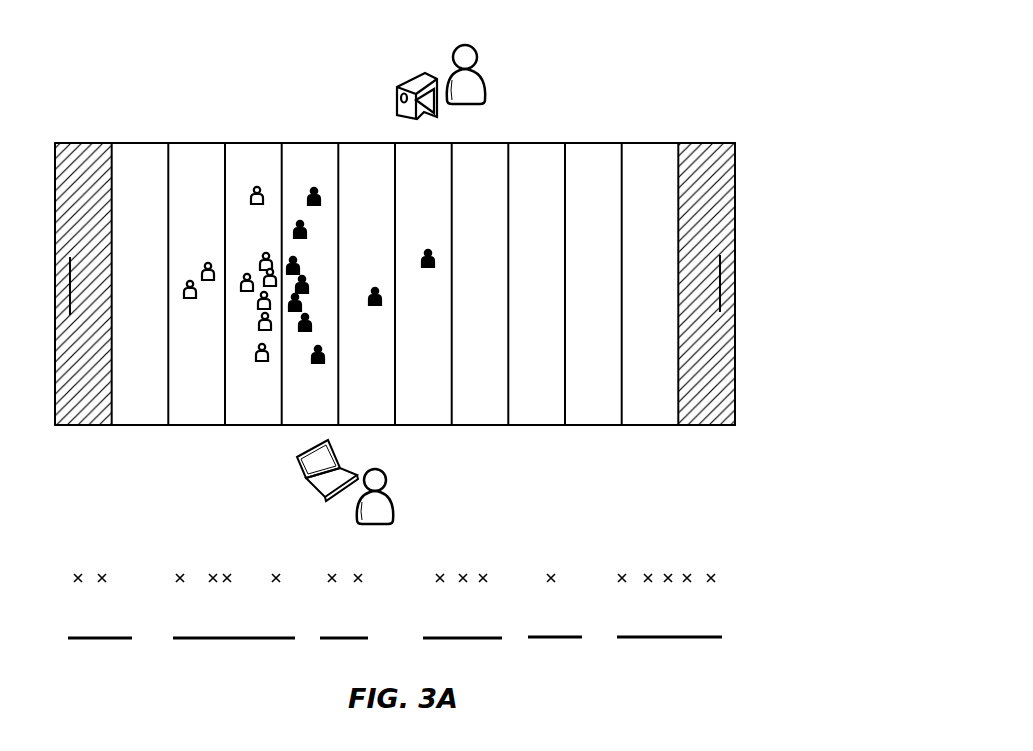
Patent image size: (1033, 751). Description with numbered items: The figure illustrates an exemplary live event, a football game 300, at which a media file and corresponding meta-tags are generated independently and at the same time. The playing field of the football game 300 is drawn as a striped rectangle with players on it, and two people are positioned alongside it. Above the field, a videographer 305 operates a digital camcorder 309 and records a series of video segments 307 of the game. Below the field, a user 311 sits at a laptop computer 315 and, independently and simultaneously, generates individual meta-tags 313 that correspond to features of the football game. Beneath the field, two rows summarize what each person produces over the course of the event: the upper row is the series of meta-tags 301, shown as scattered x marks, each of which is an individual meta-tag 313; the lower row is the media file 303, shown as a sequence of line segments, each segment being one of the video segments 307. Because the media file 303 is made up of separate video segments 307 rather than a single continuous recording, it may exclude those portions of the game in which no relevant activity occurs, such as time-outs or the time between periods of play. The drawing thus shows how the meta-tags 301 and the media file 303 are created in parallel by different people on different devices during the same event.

The football game 300 is at (593, 139).
The series of meta-tags 301 is at (52, 567).
The media file 303 is at (52, 627).
The videographer 305 is at (475, 46).
The video segments 307 is at (661, 642).
The digital camcorder 309 is at (404, 80).
The user 311 is at (397, 497).
The individual meta-tag 313 is at (548, 561).
The laptop computer 315 is at (302, 480).